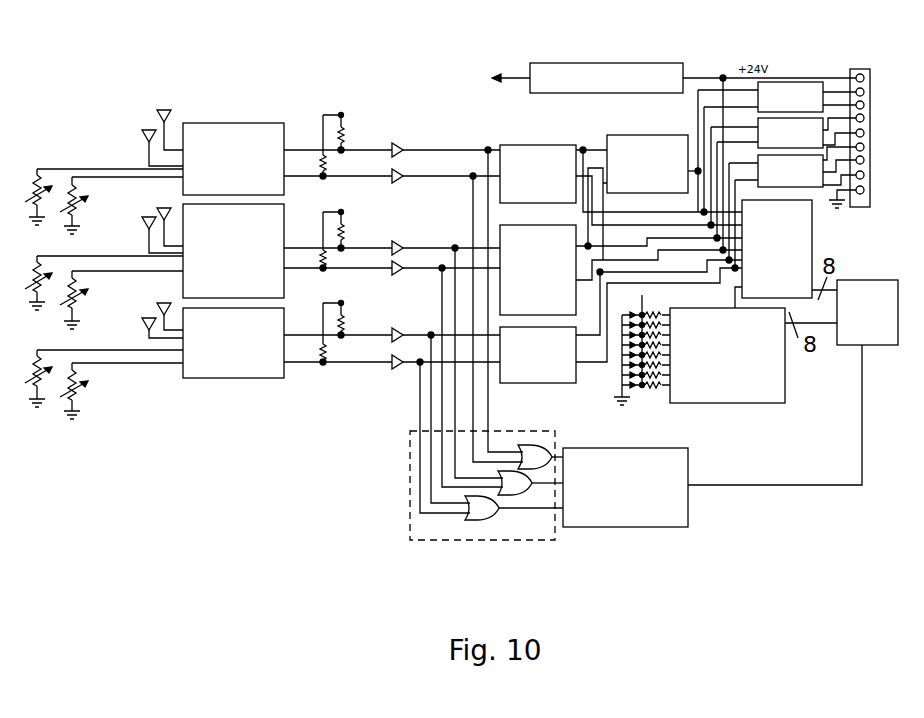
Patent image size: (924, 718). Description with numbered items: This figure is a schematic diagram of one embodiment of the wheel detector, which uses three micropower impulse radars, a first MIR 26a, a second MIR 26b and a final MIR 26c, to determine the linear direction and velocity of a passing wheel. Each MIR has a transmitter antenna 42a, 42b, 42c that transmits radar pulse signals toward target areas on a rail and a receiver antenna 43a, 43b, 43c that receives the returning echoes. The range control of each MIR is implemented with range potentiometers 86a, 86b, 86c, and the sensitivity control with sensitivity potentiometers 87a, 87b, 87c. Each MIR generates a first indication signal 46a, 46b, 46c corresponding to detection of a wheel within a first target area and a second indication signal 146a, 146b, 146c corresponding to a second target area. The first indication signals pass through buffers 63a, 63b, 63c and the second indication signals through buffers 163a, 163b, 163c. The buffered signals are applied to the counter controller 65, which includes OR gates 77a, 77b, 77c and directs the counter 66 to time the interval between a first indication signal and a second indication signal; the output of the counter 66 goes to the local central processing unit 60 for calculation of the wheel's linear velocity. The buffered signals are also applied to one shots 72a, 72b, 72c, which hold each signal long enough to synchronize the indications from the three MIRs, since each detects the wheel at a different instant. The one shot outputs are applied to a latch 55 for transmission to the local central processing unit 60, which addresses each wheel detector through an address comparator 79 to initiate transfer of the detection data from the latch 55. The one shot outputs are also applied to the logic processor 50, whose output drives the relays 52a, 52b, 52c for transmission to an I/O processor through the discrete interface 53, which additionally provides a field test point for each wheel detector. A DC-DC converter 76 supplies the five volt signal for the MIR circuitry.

The first MIR 26a is at (229, 122).
The second MIR 26b is at (233, 251).
The final MIR 26c is at (232, 380).
The transmitter antenna 42a is at (147, 127).
The transmitter antenna 42b is at (144, 223).
The transmitter antenna 42c is at (147, 323).
The receiver antenna 43a is at (165, 108).
The receiver antenna 43b is at (165, 208).
The receiver antenna 43c is at (165, 303).
The range potentiometer 86a is at (30, 182).
The range potentiometer 86b is at (29, 270).
The range potentiometer 86c is at (29, 366).
The sensitivity potentiometer 87a is at (80, 203).
The sensitivity potentiometer 87b is at (82, 316).
The sensitivity potentiometer 87c is at (86, 400).
The indication signal 46a is at (300, 147).
The indication signal 46b is at (370, 248).
The indication signal 46c is at (350, 378).
The indication signal 146a is at (357, 176).
The indication signal 146b is at (345, 270).
The indication signal 146c is at (340, 368).
The buffer 63a is at (399, 143).
The buffer 63b is at (402, 242).
The buffer 63c is at (400, 330).
The buffer 163a is at (400, 184).
The buffer 163b is at (398, 282).
The buffer 163c is at (397, 372).
The one shot 72a is at (511, 144).
The one shot 72b is at (538, 270).
The one shot 72c is at (566, 384).
The DC-DC converter 76 is at (588, 62).
The logic processor 50 is at (650, 134).
The relay 52a is at (793, 81).
The relay 52b is at (747, 117).
The relay 52c is at (818, 200).
The discrete interface 53 is at (861, 68).
The latch 55 is at (777, 249).
The local central processing unit 60 is at (840, 347).
The address comparator 79 is at (748, 405).
The counter controller 65 is at (410, 483).
The OR gate 77a is at (525, 447).
The OR gate 77b is at (510, 508).
The OR gate 77c is at (480, 522).
The counter 66 is at (605, 530).